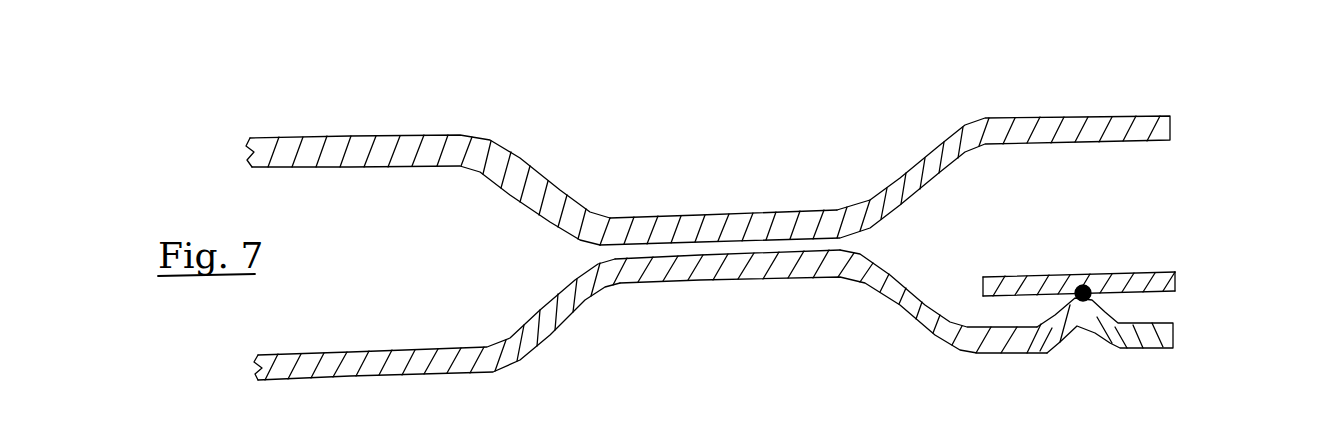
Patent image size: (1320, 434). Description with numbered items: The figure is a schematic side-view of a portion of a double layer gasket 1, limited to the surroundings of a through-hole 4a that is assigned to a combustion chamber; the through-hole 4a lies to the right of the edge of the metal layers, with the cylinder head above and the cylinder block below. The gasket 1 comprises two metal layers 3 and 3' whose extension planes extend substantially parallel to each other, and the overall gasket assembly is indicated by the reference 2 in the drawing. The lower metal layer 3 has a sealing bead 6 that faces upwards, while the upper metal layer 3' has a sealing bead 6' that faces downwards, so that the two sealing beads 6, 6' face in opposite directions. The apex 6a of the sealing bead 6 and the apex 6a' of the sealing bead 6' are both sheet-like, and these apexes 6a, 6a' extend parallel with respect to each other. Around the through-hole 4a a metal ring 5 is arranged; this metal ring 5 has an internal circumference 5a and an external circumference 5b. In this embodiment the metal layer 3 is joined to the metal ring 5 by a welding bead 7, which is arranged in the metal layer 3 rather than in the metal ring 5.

The gasket 1 is at (325, 76).
The strap 2 is at (408, 76).
The metal layer 3 is at (437, 338).
The metal layer 3' is at (431, 190).
The through-hole 4a is at (1268, 294).
The metal ring 5 is at (1031, 280).
The internal circumference 5a is at (1175, 286).
The external circumference 5b is at (982, 293).
The sealing bead 6 is at (830, 324).
The sealing bead 6' is at (885, 180).
The apex 6a is at (727, 284).
The apex 6a' is at (723, 195).
The welding bead 7 is at (1087, 320).